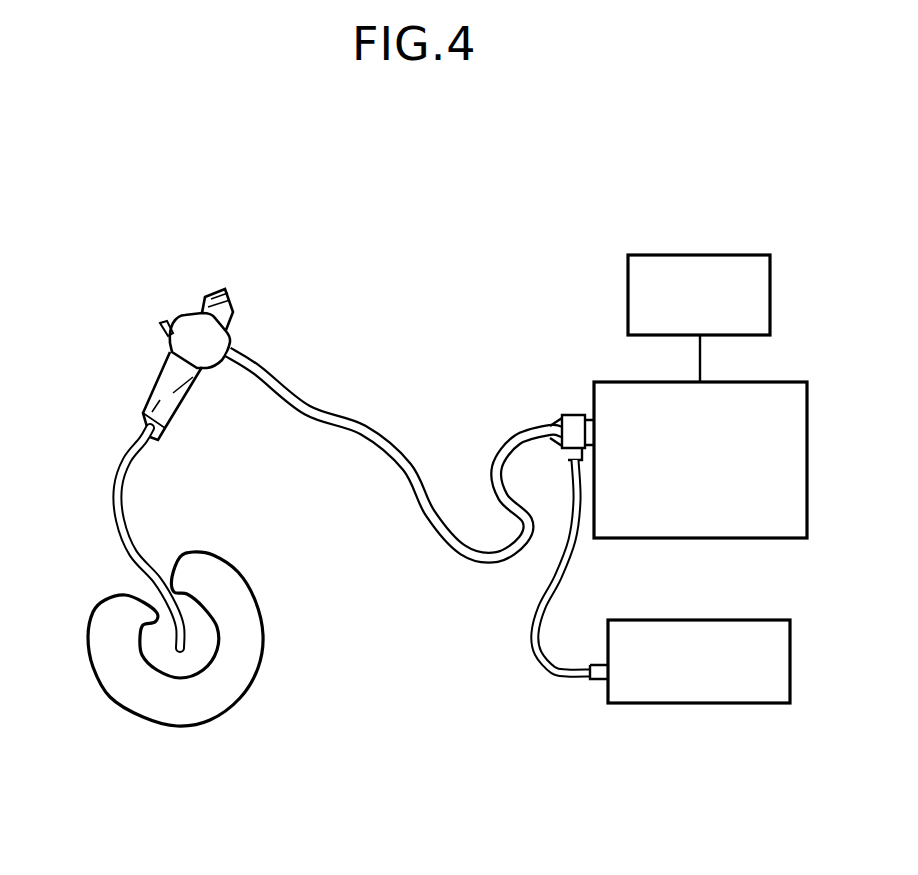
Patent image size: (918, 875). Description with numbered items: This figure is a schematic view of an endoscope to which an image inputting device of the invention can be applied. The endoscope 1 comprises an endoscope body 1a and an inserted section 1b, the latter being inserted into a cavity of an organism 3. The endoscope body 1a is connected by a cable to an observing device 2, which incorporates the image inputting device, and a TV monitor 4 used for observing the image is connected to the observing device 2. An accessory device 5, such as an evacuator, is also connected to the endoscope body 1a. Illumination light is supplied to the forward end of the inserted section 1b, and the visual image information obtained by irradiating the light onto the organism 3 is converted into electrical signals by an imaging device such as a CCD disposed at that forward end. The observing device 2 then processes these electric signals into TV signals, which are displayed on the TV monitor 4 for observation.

The endoscope 1 is at (237, 334).
The endoscope body 1a is at (160, 375).
The inserted section 1b is at (134, 566).
The observing device 2 is at (808, 466).
The organism 3 is at (258, 651).
The TV monitor 4 is at (701, 255).
The accessory device 5 is at (791, 660).